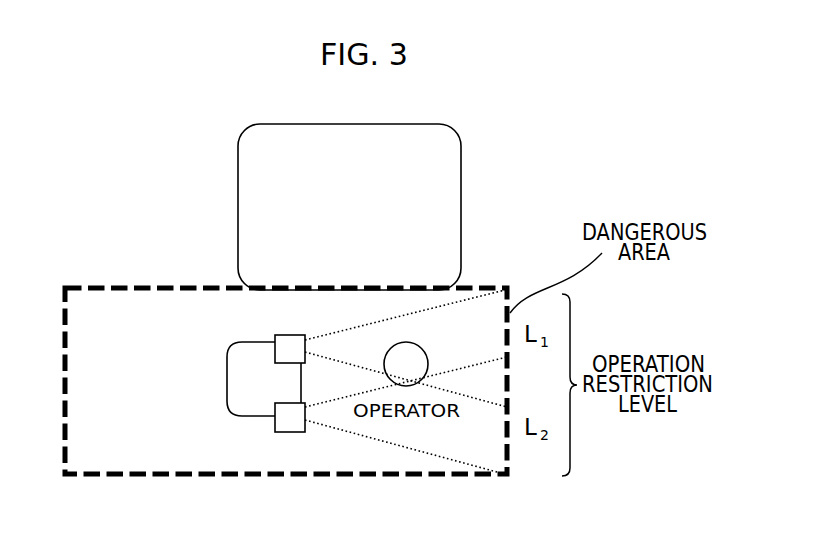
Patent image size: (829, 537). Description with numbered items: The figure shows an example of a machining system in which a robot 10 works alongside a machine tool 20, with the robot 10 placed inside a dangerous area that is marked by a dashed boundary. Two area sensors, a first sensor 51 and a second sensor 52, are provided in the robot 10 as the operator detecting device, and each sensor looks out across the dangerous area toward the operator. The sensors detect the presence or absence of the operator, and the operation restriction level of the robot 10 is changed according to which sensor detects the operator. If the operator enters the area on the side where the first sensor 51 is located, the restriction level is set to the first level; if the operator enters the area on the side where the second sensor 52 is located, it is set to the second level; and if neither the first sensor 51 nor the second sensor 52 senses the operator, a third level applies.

The robot 10 is at (228, 349).
The machine tool 20 is at (419, 123).
The first sensor 51 is at (274, 338).
The second sensor 52 is at (274, 428).